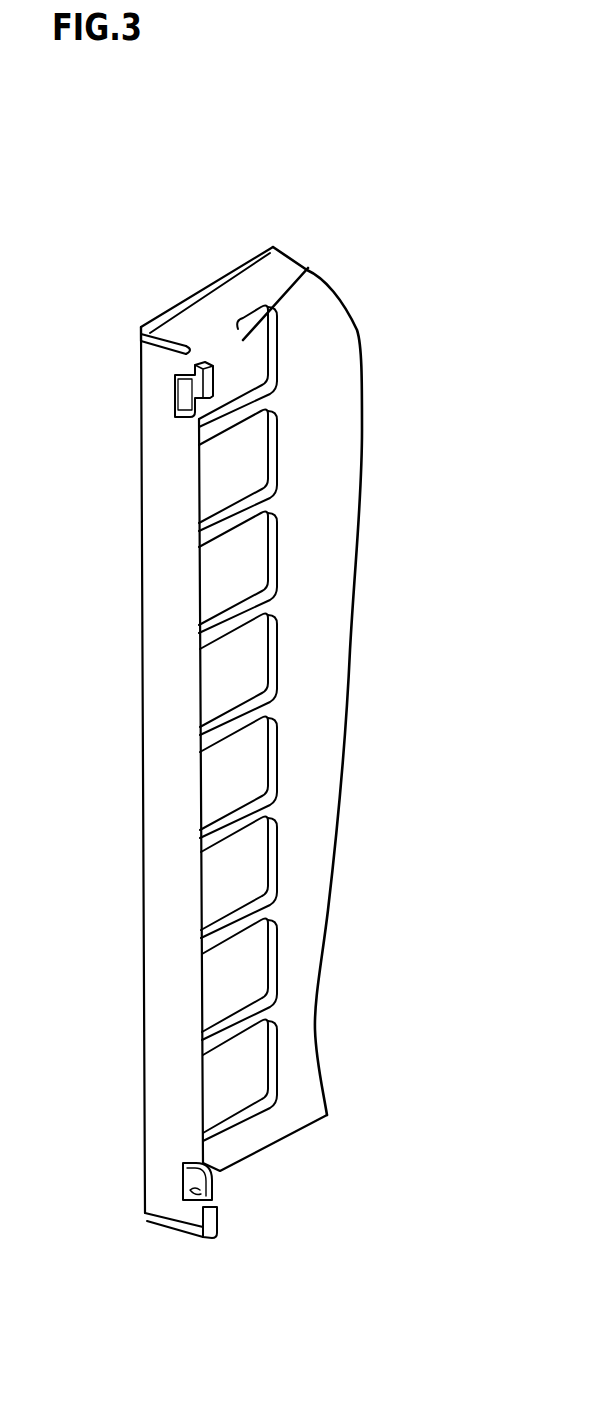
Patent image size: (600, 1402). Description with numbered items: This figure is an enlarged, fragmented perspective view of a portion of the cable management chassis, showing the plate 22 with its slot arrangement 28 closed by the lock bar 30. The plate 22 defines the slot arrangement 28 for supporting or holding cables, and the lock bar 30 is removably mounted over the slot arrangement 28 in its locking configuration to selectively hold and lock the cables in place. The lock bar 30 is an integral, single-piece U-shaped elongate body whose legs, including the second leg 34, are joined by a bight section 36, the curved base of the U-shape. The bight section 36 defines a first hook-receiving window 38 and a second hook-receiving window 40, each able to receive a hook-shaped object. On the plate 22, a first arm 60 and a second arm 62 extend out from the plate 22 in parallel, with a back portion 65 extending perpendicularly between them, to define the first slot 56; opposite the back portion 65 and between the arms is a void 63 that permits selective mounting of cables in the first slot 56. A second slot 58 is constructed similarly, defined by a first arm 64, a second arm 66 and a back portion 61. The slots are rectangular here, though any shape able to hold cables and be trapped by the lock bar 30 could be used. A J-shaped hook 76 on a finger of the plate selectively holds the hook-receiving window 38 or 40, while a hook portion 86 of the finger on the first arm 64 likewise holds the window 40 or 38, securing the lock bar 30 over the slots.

The plate 22 is at (340, 845).
The slot arrangement 28 is at (344, 775).
The lock bar 30 is at (147, 893).
The second leg 34 is at (160, 350).
The bight section 36 is at (194, 350).
The first hook-receiving window 38 is at (162, 390).
The second hook-receiving window 40 is at (184, 1186).
The first slot 56 is at (268, 327).
The second slot 58 is at (274, 1045).
The first arm 60 is at (198, 294).
The back portion 61 is at (276, 1068).
The second arm 62 is at (247, 400).
The void 63 is at (285, 289).
The first arm 64 is at (289, 1137).
The back portion 65 is at (272, 348).
The second arm 66 is at (243, 1016).
The J-shaped hook 76 is at (214, 373).
The hook portion 86 is at (218, 1218).